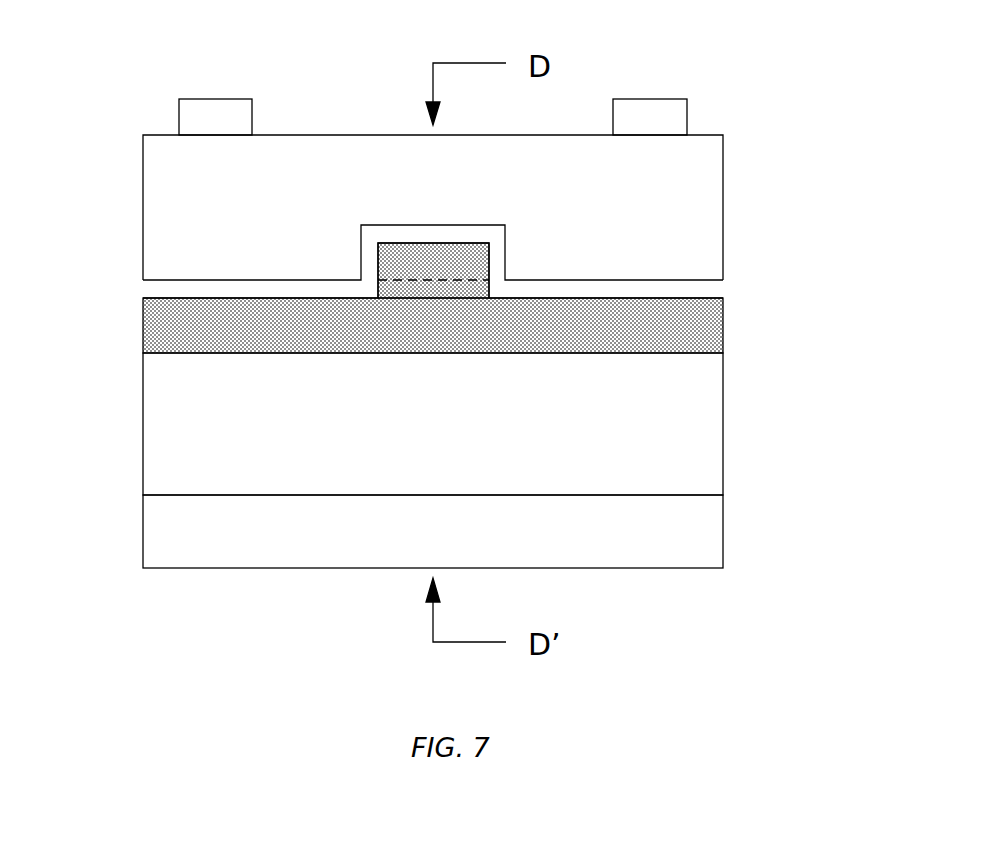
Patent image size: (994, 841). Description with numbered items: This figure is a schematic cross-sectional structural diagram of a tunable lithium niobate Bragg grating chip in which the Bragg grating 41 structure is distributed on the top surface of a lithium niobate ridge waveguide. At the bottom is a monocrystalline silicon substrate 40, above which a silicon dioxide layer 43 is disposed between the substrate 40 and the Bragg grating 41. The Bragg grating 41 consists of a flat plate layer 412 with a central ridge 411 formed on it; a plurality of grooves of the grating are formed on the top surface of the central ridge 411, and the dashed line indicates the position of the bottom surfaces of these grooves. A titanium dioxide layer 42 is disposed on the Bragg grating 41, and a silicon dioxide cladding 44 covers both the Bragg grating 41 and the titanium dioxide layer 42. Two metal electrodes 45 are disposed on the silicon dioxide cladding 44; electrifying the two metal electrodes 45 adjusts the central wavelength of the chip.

The monocrystalline silicon substrate 40 is at (217, 533).
The Bragg grating 41 is at (542, 291).
The central ridge 411 is at (468, 262).
The flat plate layer 412 is at (657, 335).
The titanium dioxide layer 42 is at (497, 243).
The silicon dioxide layer 43 is at (217, 425).
The silicon dioxide cladding 44 is at (217, 219).
The metal electrode 45 is at (217, 126).